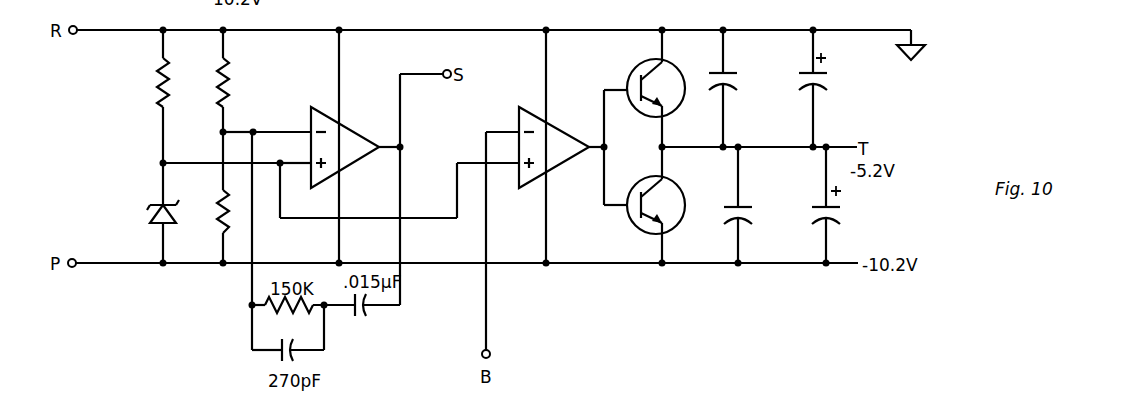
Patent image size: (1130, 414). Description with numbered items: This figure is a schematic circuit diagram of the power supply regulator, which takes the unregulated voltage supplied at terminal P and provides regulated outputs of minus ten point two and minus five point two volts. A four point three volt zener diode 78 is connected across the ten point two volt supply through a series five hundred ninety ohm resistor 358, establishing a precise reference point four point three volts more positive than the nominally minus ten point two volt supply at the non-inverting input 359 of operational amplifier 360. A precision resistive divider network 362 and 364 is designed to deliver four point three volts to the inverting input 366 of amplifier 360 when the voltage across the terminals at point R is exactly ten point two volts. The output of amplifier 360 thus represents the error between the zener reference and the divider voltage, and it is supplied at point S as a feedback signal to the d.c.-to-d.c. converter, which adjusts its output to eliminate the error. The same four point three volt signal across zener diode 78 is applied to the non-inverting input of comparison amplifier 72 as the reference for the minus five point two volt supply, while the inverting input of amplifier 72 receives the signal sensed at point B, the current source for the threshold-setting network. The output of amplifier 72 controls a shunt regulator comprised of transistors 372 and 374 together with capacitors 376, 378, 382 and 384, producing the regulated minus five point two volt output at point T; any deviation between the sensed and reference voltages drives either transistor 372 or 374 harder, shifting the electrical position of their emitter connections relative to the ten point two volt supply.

The series resistor 358 is at (167, 86).
The precision resistive divider network resistor 364 is at (221, 92).
The zener diode 78 is at (172, 204).
The precision resistive divider network resistor 362 is at (218, 230).
The operational amplifier 360 is at (357, 127).
The inverting input 366 is at (306, 129).
The non-inverting input 359 is at (309, 167).
The comparison amplifier 72 is at (554, 128).
The transistor 372 is at (631, 66).
The transistor 374 is at (632, 224).
The capacitor 376 is at (728, 90).
The capacitor 382 is at (823, 90).
The capacitor 378 is at (724, 222).
The capacitor 384 is at (814, 224).